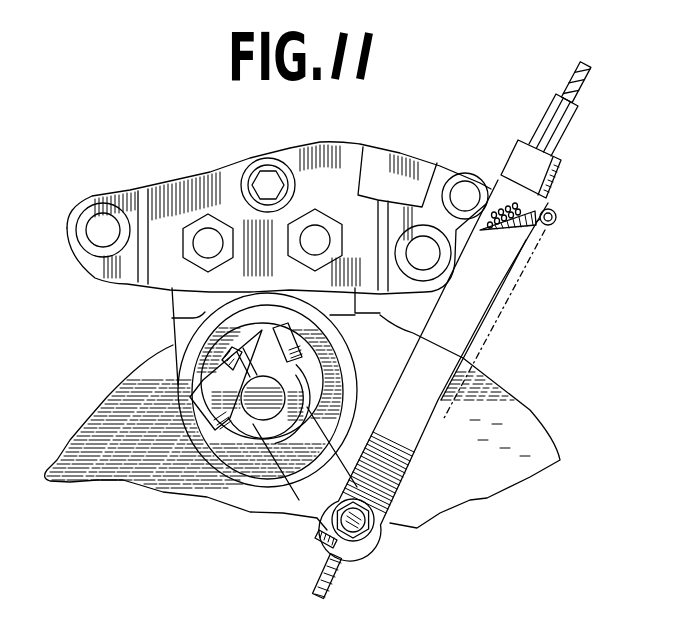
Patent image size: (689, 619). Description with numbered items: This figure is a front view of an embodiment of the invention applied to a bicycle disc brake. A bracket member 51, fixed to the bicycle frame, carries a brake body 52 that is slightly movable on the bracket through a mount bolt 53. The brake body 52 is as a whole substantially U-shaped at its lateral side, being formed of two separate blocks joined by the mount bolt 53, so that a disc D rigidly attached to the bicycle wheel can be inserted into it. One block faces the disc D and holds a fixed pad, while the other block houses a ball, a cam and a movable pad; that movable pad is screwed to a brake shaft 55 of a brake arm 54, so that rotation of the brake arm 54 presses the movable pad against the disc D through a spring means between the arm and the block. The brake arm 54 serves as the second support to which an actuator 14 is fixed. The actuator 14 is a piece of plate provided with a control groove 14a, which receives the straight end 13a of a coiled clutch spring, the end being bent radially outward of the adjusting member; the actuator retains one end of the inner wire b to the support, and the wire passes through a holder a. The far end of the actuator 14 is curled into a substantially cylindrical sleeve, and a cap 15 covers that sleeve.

The bracket member 51 is at (495, 180).
The brake body 52 is at (246, 182).
The mount bolt 53 is at (320, 228).
The brake arm 54 is at (317, 492).
The brake shaft 55 is at (253, 423).
The actuator 14 is at (410, 450).
The control groove 14a is at (514, 246).
The straight end 13a is at (551, 226).
The cap 15 is at (562, 185).
The disc D is at (122, 378).
The holder a is at (568, 127).
The inner wire b is at (586, 89).